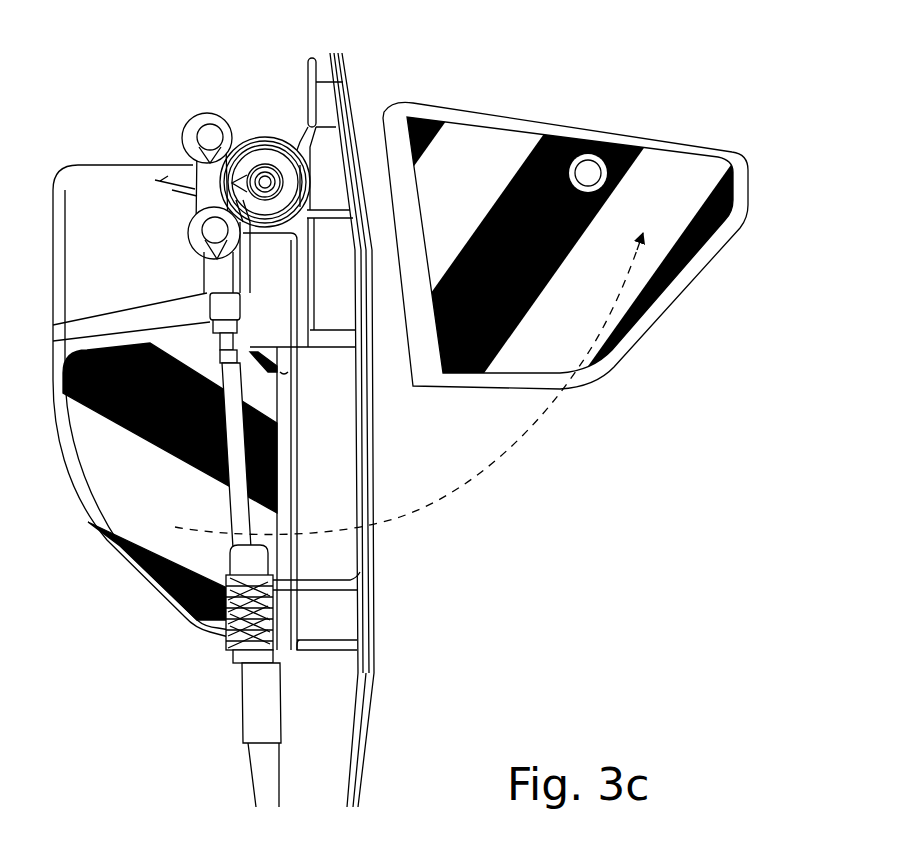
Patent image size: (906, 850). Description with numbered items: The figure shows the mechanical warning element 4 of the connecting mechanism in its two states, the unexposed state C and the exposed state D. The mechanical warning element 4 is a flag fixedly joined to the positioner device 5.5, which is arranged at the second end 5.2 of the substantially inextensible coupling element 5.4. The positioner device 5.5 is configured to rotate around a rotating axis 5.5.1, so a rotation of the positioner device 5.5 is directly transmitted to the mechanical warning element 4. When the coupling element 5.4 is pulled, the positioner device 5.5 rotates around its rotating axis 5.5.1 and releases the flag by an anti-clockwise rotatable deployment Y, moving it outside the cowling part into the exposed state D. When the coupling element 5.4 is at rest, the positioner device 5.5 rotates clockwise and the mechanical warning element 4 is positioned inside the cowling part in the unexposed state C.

The mechanical warning element 4 is at (677, 177).
The second end 5.2 is at (168, 126).
The substantially inextensible coupling element 5.4 is at (246, 654).
The positioner device 5.5 is at (244, 117).
The rotating axis 5.5.1 is at (265, 182).
The unexposed state C is at (125, 670).
The exposed state D is at (755, 320).
The anti-clockwise rotatable deployment Y is at (409, 384).